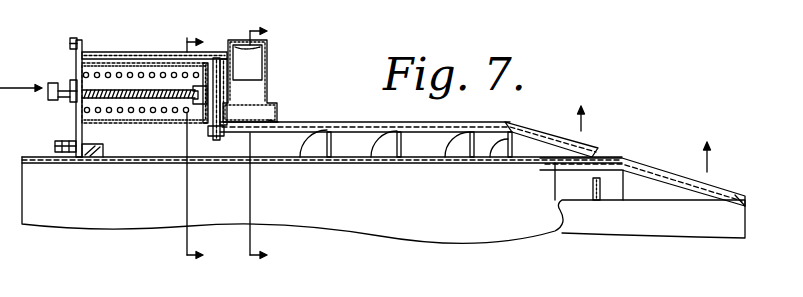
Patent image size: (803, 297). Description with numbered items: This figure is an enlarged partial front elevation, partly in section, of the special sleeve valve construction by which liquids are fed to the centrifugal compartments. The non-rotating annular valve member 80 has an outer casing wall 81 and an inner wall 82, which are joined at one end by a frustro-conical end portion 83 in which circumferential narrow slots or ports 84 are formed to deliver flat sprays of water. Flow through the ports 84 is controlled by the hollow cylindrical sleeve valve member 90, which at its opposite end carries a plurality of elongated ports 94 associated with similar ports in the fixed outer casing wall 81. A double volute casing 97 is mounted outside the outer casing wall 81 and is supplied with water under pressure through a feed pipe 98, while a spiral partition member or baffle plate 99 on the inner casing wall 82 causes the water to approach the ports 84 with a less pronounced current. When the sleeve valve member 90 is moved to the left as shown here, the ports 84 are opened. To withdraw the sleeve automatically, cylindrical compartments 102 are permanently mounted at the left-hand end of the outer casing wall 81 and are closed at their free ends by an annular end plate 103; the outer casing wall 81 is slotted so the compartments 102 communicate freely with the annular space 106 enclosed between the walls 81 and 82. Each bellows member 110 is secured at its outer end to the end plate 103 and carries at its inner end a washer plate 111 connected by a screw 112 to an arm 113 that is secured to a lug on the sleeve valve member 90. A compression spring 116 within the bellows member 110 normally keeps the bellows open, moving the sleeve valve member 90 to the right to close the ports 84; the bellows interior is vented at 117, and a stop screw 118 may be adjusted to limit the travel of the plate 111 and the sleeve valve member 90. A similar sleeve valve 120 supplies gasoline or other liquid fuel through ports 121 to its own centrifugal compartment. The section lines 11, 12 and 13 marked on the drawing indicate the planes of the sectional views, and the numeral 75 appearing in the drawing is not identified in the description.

The section line 11- 11 is at (249, 148).
The section line 12- 12 is at (177, 149).
The direction of feed 13 is at (21, 77).
The frame 75 is at (275, 122).
The annular valve member 80 is at (335, 122).
The outer casing wall 81 is at (431, 127).
The inner wall 82 is at (446, 163).
The frustro-conical end portion 83 is at (532, 140).
The ports 84 is at (586, 146).
The sleeve valve member 90 is at (494, 145).
The elongated ports 94 is at (291, 133).
The double volute casing 97 is at (273, 114).
The feed pipe 98 is at (267, 44).
The spiral partition member 99 is at (447, 142).
The cylindrical compartments 102 is at (122, 54).
The annular end plate 103 is at (78, 38).
The annular space 106 is at (241, 144).
The bellows member 110 is at (153, 52).
The washer plate 111 is at (218, 56).
The screw 112 is at (202, 98).
The arm 113 is at (250, 62).
The compression spring 116 is at (103, 72).
The vent 117 is at (78, 66).
The stop screw 118 is at (50, 100).
The sleeve valve 120 is at (632, 167).
The ports 121 is at (710, 190).